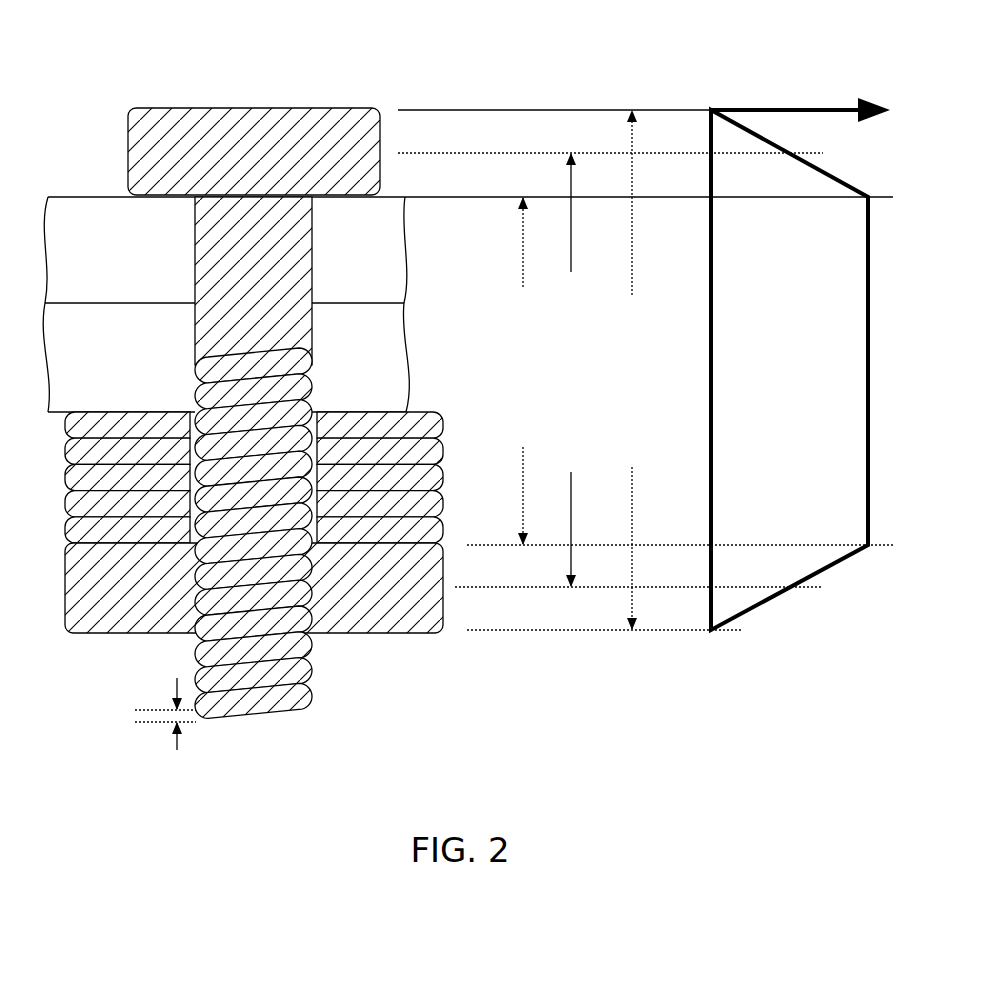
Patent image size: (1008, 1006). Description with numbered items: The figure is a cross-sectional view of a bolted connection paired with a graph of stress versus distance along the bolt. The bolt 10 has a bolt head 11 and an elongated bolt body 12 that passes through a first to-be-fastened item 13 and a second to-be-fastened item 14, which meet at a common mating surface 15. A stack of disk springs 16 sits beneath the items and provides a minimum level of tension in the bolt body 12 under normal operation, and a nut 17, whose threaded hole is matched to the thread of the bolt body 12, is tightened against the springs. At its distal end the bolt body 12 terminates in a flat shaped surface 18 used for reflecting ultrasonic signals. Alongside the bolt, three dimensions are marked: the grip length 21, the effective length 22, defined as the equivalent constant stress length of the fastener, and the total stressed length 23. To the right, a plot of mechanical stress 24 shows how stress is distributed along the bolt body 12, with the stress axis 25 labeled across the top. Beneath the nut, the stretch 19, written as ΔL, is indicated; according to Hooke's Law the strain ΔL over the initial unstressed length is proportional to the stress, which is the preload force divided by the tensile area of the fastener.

The bolt 10 is at (292, 410).
The bolt head 11 is at (290, 122).
The bolt body 12 is at (282, 222).
The first to-be-fastened item 13 is at (110, 223).
The second to-be-fastened item 14 is at (60, 383).
The common mating surface 15 is at (342, 305).
The disk springs 16 is at (423, 418).
The nut 17 is at (380, 618).
The flat shaped surface 18 is at (288, 725).
The stretch ΔL 19 is at (100, 691).
The grip length 21 is at (507, 435).
The effective length 22 is at (558, 295).
The total stressed length 23 is at (638, 435).
The plot of mechanical stress 24 is at (814, 640).
The stress arrow 25 is at (793, 65).